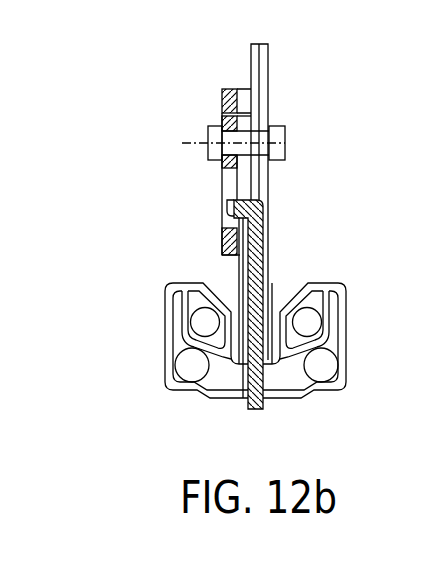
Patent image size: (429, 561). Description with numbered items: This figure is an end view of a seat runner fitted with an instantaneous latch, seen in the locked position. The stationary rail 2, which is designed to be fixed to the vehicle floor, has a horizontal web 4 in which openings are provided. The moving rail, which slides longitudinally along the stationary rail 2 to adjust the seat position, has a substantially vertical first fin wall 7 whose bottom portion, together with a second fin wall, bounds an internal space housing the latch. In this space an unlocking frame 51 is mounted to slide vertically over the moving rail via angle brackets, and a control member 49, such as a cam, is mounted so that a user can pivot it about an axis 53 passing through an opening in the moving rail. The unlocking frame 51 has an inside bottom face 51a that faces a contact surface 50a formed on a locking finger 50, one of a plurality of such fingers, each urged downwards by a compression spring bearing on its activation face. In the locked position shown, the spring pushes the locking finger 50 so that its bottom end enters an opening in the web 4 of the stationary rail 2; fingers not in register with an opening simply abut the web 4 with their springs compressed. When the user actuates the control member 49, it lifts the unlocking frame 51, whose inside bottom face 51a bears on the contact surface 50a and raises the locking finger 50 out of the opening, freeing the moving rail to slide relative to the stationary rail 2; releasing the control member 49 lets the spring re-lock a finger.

The stationary rail 2 is at (162, 397).
The horizontal web 4 is at (227, 402).
The first fin wall 7 is at (263, 88).
The control member 49 is at (222, 120).
The locking finger 50 is at (257, 240).
The contact surface 50a is at (227, 200).
The unlocking frame 51 is at (222, 90).
The inside bottom face 51a is at (233, 223).
The axis 53 is at (227, 140).